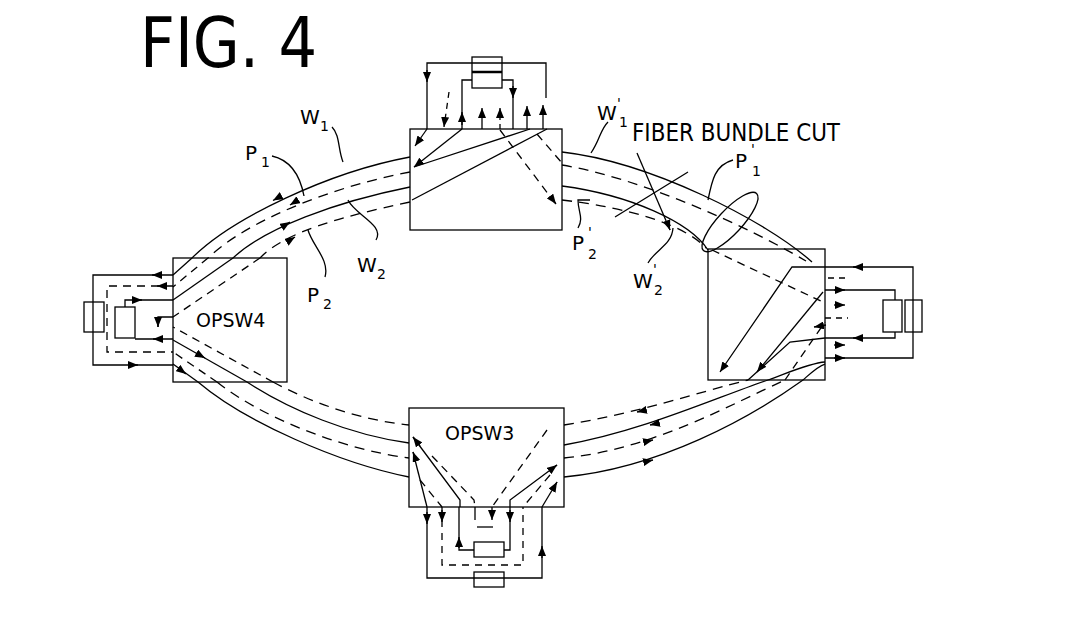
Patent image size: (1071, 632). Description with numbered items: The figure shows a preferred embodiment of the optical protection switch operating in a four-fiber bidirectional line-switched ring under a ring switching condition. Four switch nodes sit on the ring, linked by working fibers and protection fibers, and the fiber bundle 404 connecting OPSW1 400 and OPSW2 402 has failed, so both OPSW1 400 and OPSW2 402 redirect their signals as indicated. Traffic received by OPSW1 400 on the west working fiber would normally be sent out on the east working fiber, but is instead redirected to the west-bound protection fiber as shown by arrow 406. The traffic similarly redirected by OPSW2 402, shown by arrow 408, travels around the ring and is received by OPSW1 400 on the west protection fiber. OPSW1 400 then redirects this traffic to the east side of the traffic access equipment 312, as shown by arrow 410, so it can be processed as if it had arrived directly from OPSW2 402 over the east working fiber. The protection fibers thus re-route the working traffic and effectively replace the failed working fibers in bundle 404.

The traffic access equipment 312 is at (485, 57).
The OPSW1 400 is at (552, 134).
The OPSW2 402 is at (815, 250).
The fiber bundle 404 is at (757, 200).
The arrow 406 is at (462, 130).
The arrow 408 is at (707, 330).
The arrow 410 is at (488, 165).